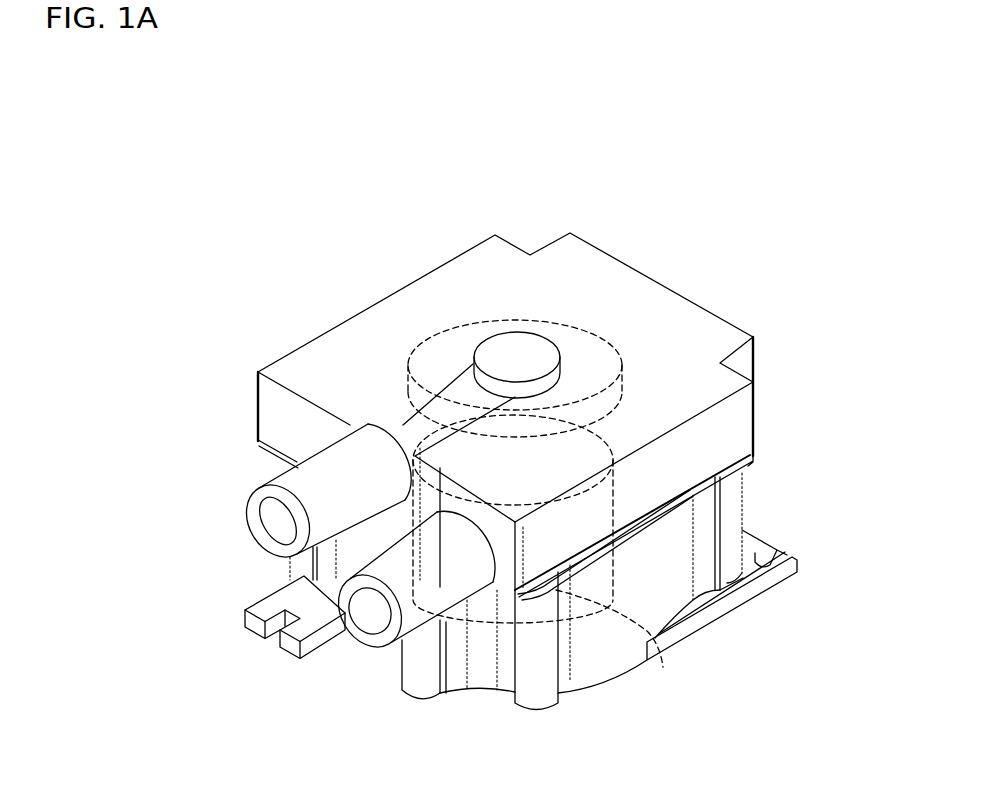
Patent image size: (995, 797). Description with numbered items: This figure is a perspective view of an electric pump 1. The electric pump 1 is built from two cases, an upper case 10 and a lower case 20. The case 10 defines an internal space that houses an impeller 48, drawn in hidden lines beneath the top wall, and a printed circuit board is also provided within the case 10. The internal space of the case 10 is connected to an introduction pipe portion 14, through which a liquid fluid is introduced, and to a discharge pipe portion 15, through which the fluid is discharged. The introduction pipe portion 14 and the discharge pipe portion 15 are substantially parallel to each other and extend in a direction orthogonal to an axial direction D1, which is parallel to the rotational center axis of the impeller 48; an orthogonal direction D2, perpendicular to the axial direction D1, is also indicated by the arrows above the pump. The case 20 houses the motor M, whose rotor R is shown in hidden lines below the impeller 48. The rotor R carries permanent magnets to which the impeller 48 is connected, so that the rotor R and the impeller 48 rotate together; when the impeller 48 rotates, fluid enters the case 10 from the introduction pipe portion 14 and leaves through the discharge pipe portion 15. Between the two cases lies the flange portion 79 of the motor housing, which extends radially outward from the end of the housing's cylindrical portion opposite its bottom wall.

The electric pump 1 is at (763, 278).
The case 10 is at (643, 272).
The introduction pipe portion 14 is at (273, 520).
The discharge pipe portion 15 is at (373, 613).
The case 20 is at (620, 690).
The impeller 48 is at (452, 329).
The flange portion 79 is at (742, 463).
The rotor R is at (662, 655).
The axial direction D1 is at (487, 167).
The orthogonal direction D2 is at (499, 166).